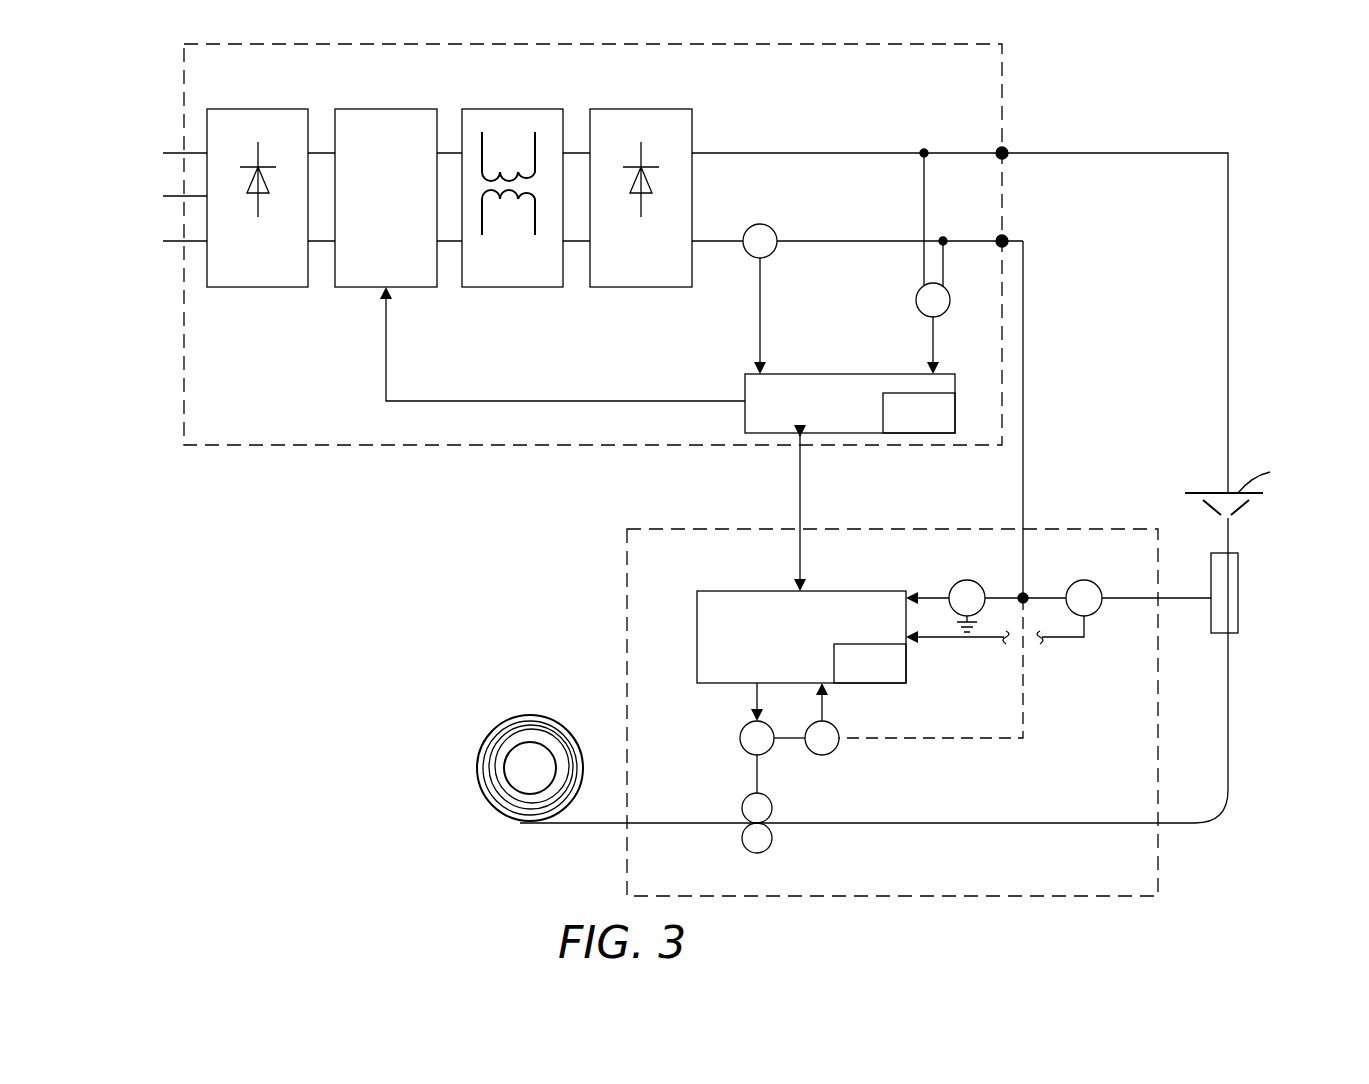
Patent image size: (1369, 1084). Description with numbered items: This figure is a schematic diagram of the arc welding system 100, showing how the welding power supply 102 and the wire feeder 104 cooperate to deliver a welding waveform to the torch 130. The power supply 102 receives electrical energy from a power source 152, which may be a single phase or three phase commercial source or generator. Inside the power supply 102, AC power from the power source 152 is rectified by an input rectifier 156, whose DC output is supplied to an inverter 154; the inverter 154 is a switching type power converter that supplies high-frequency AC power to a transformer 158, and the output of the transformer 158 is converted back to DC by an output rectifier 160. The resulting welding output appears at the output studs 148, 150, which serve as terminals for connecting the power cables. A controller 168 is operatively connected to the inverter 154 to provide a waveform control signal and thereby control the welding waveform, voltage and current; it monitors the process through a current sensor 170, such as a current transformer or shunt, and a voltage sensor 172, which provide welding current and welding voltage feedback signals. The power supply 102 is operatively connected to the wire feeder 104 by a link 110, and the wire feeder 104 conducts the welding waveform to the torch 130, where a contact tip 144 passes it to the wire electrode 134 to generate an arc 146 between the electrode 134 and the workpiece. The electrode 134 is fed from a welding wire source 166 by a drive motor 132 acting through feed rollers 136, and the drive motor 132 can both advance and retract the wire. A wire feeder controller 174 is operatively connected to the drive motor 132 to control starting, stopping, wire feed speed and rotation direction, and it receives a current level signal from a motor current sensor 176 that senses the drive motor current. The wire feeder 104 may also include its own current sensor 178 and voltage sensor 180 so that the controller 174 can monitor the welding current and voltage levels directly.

The arc welding system 100 is at (280, 580).
The welding power supply 102 is at (490, 447).
The wire feeder 104 is at (1010, 896).
The communication link 110 is at (803, 512).
The torch 130 is at (1260, 592).
The drive motor 132 is at (744, 729).
The wire electrode 134 is at (1180, 826).
The feed rollers 136 is at (745, 800).
The contact tip 144 is at (1238, 612).
The arc 146 is at (1256, 512).
The output stud 148 is at (1008, 238).
The output stud 150 is at (1008, 150).
The power source 152 is at (143, 267).
The inverter 154 is at (386, 109).
The input rectifier 156 is at (258, 109).
The transformer 158 is at (512, 109).
The output rectifier 160 is at (641, 109).
The welding wire source 166 is at (498, 724).
The controller 168 is at (743, 391).
The current sensor 170 is at (778, 249).
The voltage sensor 172 is at (950, 306).
The controller 174 is at (745, 590).
The motor current sensor 176 is at (834, 752).
The current sensor 178 is at (1093, 582).
The voltage sensor 180 is at (958, 583).